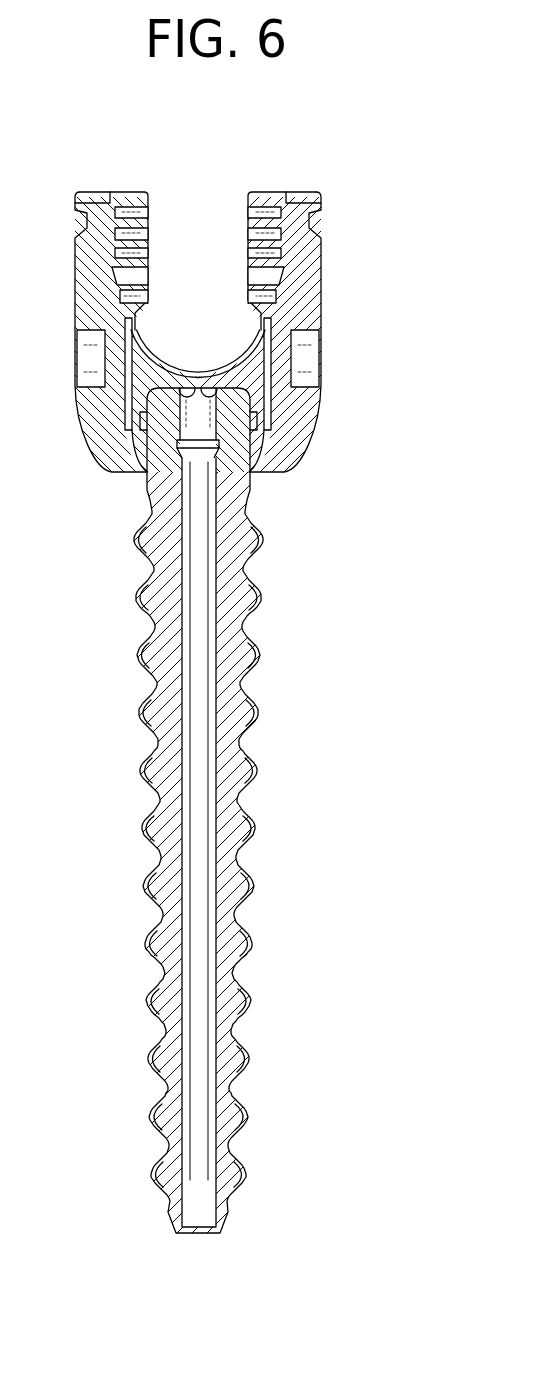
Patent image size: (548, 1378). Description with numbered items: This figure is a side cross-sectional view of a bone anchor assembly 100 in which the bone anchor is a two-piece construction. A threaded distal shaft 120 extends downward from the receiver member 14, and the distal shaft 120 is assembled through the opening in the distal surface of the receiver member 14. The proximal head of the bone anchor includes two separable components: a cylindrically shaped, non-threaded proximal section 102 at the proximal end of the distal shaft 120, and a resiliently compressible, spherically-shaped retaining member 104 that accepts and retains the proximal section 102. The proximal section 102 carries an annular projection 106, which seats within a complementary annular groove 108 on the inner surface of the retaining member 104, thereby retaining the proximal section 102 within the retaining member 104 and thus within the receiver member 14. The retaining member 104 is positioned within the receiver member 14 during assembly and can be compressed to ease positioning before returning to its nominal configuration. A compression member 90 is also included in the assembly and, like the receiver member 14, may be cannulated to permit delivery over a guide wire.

The receiver member 14 is at (307, 258).
The compression member 90 is at (296, 322).
The bone anchor assembly 100 is at (238, 712).
The proximal section 102 is at (248, 492).
The retaining member 104 is at (264, 451).
The annular projection 106 is at (100, 462).
The annular groove 108 is at (262, 420).
The distal shaft 120 is at (287, 803).